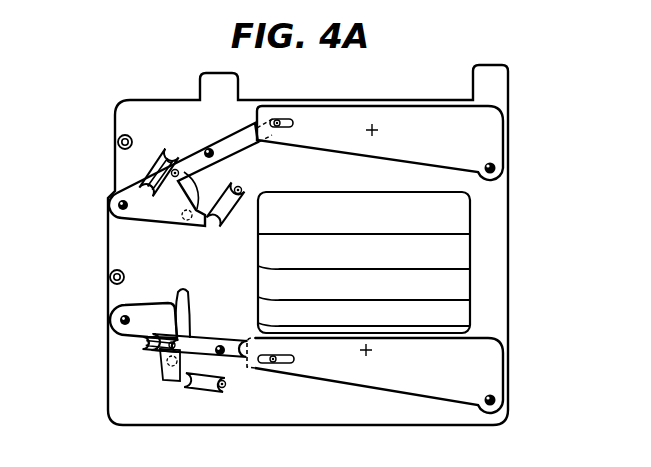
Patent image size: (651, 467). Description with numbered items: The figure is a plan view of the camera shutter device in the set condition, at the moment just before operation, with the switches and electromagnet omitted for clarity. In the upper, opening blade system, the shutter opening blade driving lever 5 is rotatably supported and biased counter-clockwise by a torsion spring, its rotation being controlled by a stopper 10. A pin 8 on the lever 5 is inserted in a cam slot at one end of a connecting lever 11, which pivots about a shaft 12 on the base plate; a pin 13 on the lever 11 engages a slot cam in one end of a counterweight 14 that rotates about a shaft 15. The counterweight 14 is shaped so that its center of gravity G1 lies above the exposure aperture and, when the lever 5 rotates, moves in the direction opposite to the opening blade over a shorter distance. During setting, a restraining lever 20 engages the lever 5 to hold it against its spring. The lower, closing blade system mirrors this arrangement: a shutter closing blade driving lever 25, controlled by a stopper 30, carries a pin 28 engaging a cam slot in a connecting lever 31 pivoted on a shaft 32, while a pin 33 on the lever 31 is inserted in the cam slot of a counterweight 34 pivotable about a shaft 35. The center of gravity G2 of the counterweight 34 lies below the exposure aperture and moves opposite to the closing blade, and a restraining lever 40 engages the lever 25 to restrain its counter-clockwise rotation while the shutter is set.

The stopper 10 is at (118, 137).
The stopper 30 is at (110, 277).
The counterweight 14 is at (351, 118).
The pin 13 is at (278, 128).
The shaft 15 is at (506, 170).
The center of gravity G1 is at (378, 130).
The connecting lever 11 is at (189, 157).
The shutter opening blade driving lever 5 is at (154, 222).
The shaft 12 is at (213, 155).
The pin 8 is at (162, 172).
The restraining lever 20 is at (228, 226).
The counterweight 34 is at (413, 384).
The pin 33 is at (276, 364).
The shaft 35 is at (506, 403).
The center of gravity G2 is at (372, 350).
The shutter closing blade driving lever 25 is at (112, 325).
The connecting lever 31 is at (205, 340).
The pin 28 is at (162, 350).
The shaft 32 is at (224, 355).
The restraining lever 40 is at (200, 382).